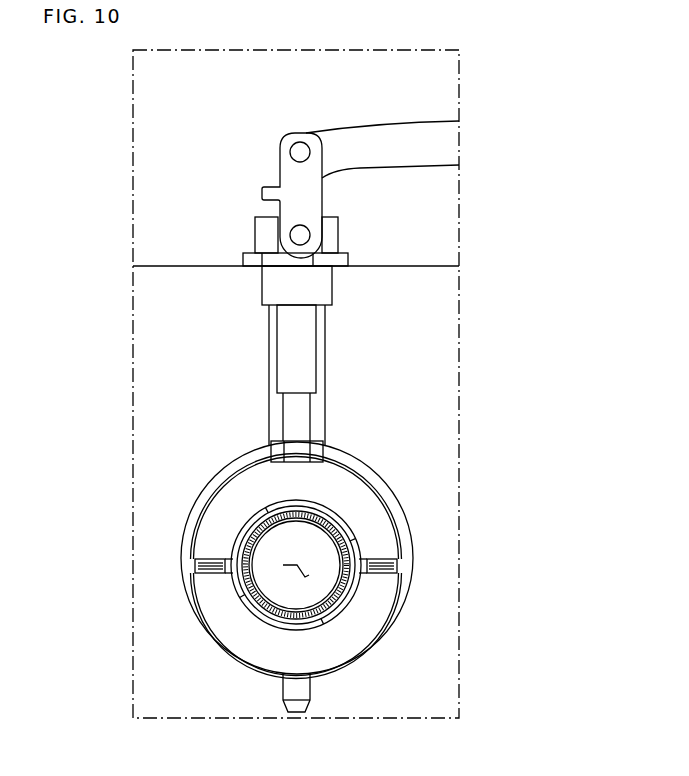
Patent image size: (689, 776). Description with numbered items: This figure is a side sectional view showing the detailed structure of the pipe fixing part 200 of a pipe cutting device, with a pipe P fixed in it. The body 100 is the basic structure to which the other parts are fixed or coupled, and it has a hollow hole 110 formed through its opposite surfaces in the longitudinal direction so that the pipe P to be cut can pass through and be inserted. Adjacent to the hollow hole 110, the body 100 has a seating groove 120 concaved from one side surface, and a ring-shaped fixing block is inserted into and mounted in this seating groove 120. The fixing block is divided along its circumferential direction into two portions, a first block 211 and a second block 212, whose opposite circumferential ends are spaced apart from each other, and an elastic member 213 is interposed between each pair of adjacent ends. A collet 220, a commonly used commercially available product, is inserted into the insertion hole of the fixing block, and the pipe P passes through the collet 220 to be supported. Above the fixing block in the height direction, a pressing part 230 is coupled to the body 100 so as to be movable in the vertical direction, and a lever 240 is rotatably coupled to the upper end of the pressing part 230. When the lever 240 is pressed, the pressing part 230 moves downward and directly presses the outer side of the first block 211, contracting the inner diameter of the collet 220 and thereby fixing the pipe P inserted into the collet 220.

The body 100 is at (163, 290).
The hollow hole 110 is at (290, 568).
The seating groove 120 is at (415, 565).
The pipe fixing part 200 is at (288, 530).
The first block 211 is at (215, 532).
The second block 212 is at (210, 603).
The elastic member 213 is at (197, 566).
The collet 220 is at (335, 520).
The pressing part 230 is at (303, 342).
The lever 240 is at (435, 147).
The pipe P is at (340, 600).